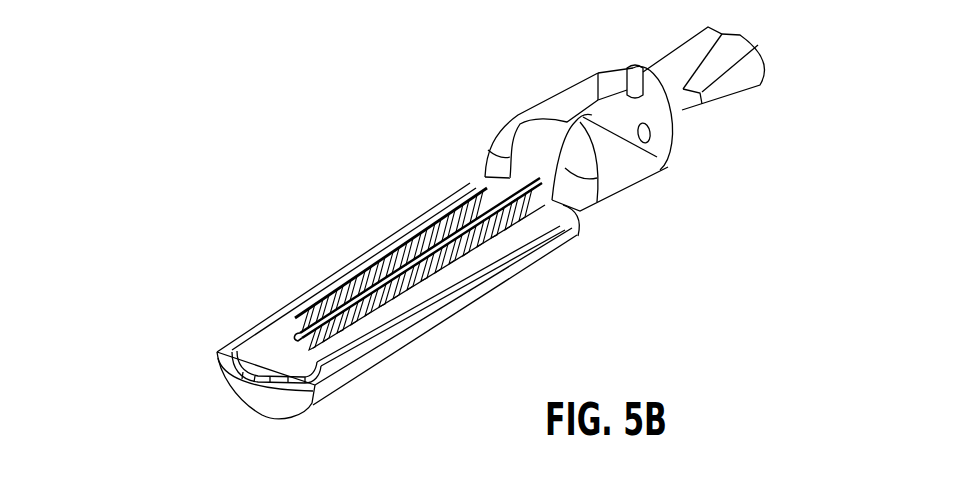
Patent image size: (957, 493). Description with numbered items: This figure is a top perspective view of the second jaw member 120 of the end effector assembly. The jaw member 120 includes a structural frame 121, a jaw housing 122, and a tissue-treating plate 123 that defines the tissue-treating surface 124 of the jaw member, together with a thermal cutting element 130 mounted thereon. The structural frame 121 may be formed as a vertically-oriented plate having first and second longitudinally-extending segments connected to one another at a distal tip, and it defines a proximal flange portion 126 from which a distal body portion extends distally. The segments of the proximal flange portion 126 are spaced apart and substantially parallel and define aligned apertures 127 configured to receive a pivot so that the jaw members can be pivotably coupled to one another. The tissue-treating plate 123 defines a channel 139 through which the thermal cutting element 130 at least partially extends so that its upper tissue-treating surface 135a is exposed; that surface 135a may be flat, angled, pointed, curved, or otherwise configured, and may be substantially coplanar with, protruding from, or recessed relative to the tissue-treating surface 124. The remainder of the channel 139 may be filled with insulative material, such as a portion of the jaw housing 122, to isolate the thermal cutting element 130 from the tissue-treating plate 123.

The jaw member 120 is at (198, 330).
The structural frame 121 is at (613, 178).
The jaw housing 122 is at (257, 395).
The tissue-treating plate 123 is at (267, 347).
The tissue-treating surface 124 is at (447, 263).
The proximal flange portion 126 is at (630, 110).
The aperture 127 is at (650, 136).
The thermal cutting element 130 is at (380, 282).
The tissue-treating surface 135a is at (452, 231).
The channel 139 is at (312, 340).